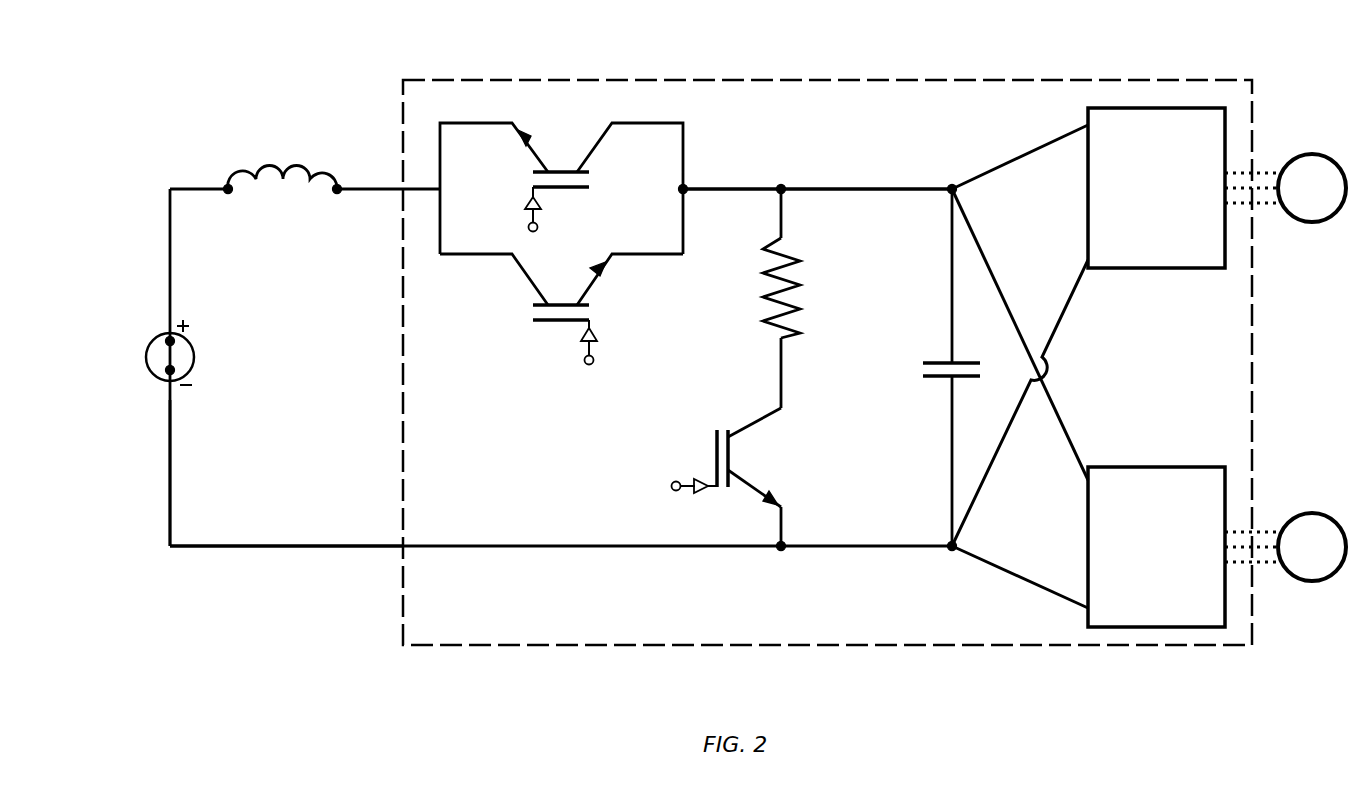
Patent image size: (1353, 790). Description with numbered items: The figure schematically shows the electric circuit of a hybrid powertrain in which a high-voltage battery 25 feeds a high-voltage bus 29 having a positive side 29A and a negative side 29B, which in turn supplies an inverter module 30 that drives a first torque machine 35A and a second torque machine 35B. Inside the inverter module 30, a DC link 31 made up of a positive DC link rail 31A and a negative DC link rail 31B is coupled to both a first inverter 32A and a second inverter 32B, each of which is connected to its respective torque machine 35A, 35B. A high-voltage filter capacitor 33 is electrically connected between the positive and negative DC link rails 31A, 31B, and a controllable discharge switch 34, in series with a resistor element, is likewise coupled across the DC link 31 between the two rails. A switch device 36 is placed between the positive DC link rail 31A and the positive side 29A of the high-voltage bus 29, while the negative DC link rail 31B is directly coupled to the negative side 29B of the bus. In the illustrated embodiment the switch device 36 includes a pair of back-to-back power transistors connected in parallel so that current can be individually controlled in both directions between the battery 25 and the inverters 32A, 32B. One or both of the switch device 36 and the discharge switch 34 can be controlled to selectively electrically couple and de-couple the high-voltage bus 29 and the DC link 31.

The high-voltage battery 25 is at (146, 356).
The high-voltage bus 29 is at (314, 556).
The positive side of the high-voltage bus 29A is at (158, 228).
The negative side of the high-voltage bus 29B is at (168, 455).
The inverter module 30 is at (437, 636).
The DC link 31 is at (812, 158).
The positive DC link rail 31A is at (910, 188).
The negative DC link rail 31B is at (480, 548).
The first inverter 32A is at (1157, 117).
The second inverter 32B is at (1157, 478).
The high-voltage filter capacitor 33 is at (943, 378).
The controllable discharge switch 34 is at (722, 490).
The first torque machine 35A is at (1312, 160).
The second torque machine 35B is at (1312, 523).
The switch device 36 is at (590, 181).